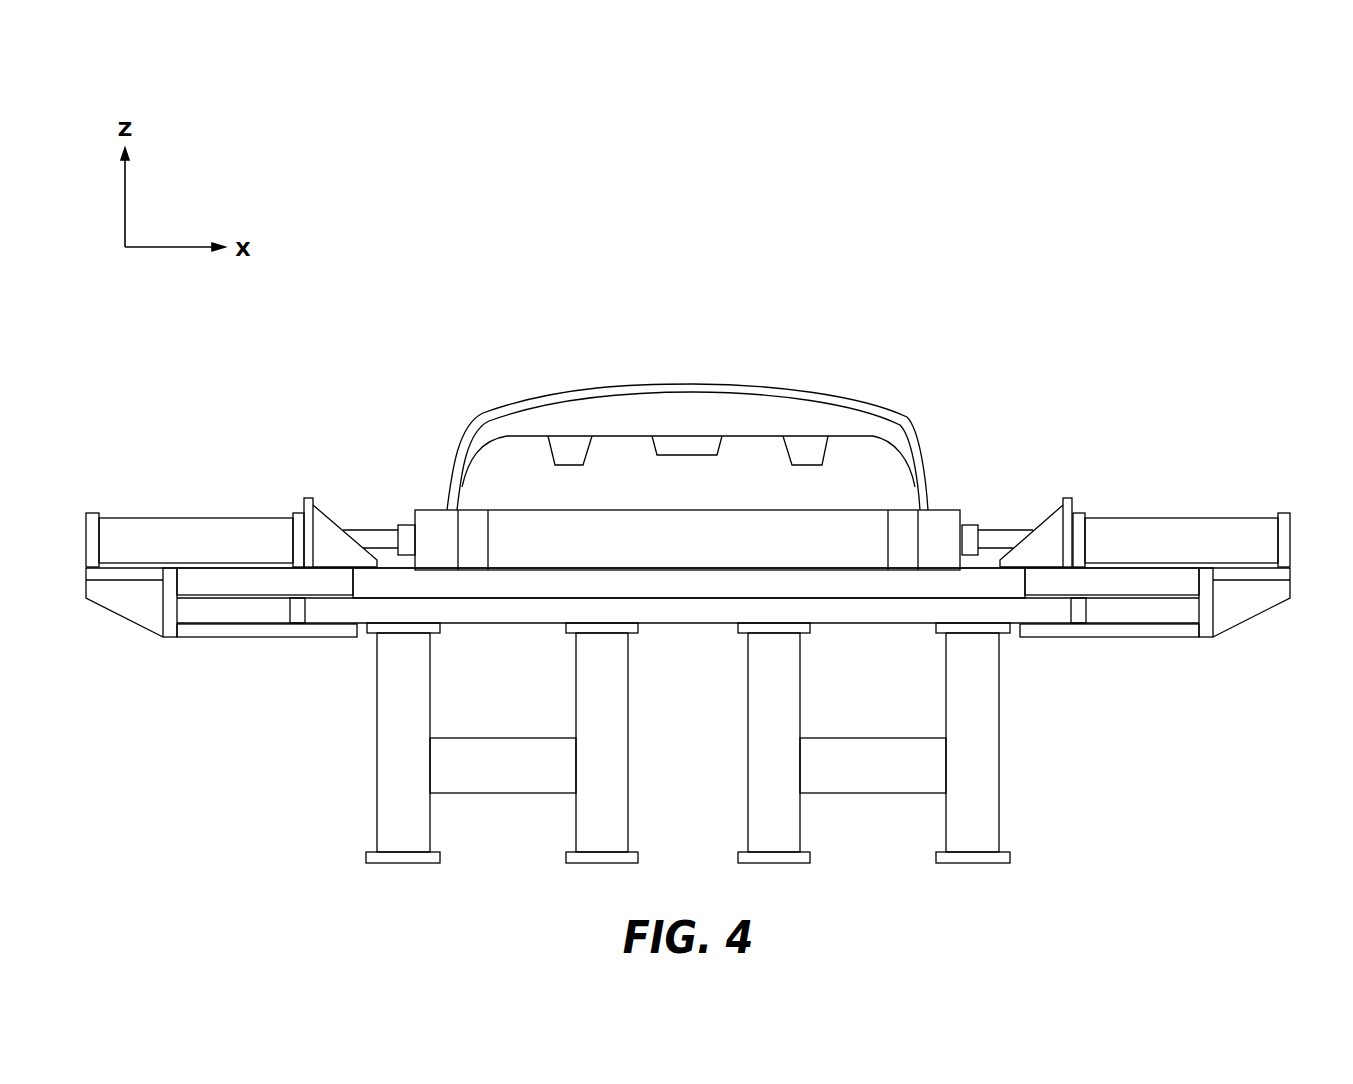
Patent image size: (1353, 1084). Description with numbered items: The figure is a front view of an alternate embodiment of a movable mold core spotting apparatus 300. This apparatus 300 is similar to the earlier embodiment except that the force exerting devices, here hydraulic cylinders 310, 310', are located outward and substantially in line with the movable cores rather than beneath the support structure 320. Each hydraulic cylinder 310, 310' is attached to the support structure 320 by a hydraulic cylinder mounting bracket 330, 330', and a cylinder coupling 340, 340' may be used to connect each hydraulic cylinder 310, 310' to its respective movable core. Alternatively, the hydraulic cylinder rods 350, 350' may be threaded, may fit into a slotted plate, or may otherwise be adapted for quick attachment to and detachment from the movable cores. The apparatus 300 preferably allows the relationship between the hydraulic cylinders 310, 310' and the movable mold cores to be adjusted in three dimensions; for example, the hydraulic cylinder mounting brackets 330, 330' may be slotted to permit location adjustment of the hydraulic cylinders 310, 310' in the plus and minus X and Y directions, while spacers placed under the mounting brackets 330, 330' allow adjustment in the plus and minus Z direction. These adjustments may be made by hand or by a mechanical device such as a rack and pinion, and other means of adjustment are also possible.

The movable mold core spotting apparatus 300 is at (1100, 286).
The hydraulic cylinder 310 is at (195, 488).
The hydraulic cylinder 310' is at (1181, 487).
The support structure 320 is at (330, 744).
The hydraulic cylinder mounting bracket 330 is at (226, 542).
The hydraulic cylinder mounting bracket 330' is at (1153, 541).
The cylinder coupling 340 is at (418, 474).
The cylinder coupling 340' is at (960, 472).
The hydraulic cylinder rod 350 is at (365, 490).
The hydraulic cylinder rod 350' is at (1014, 491).